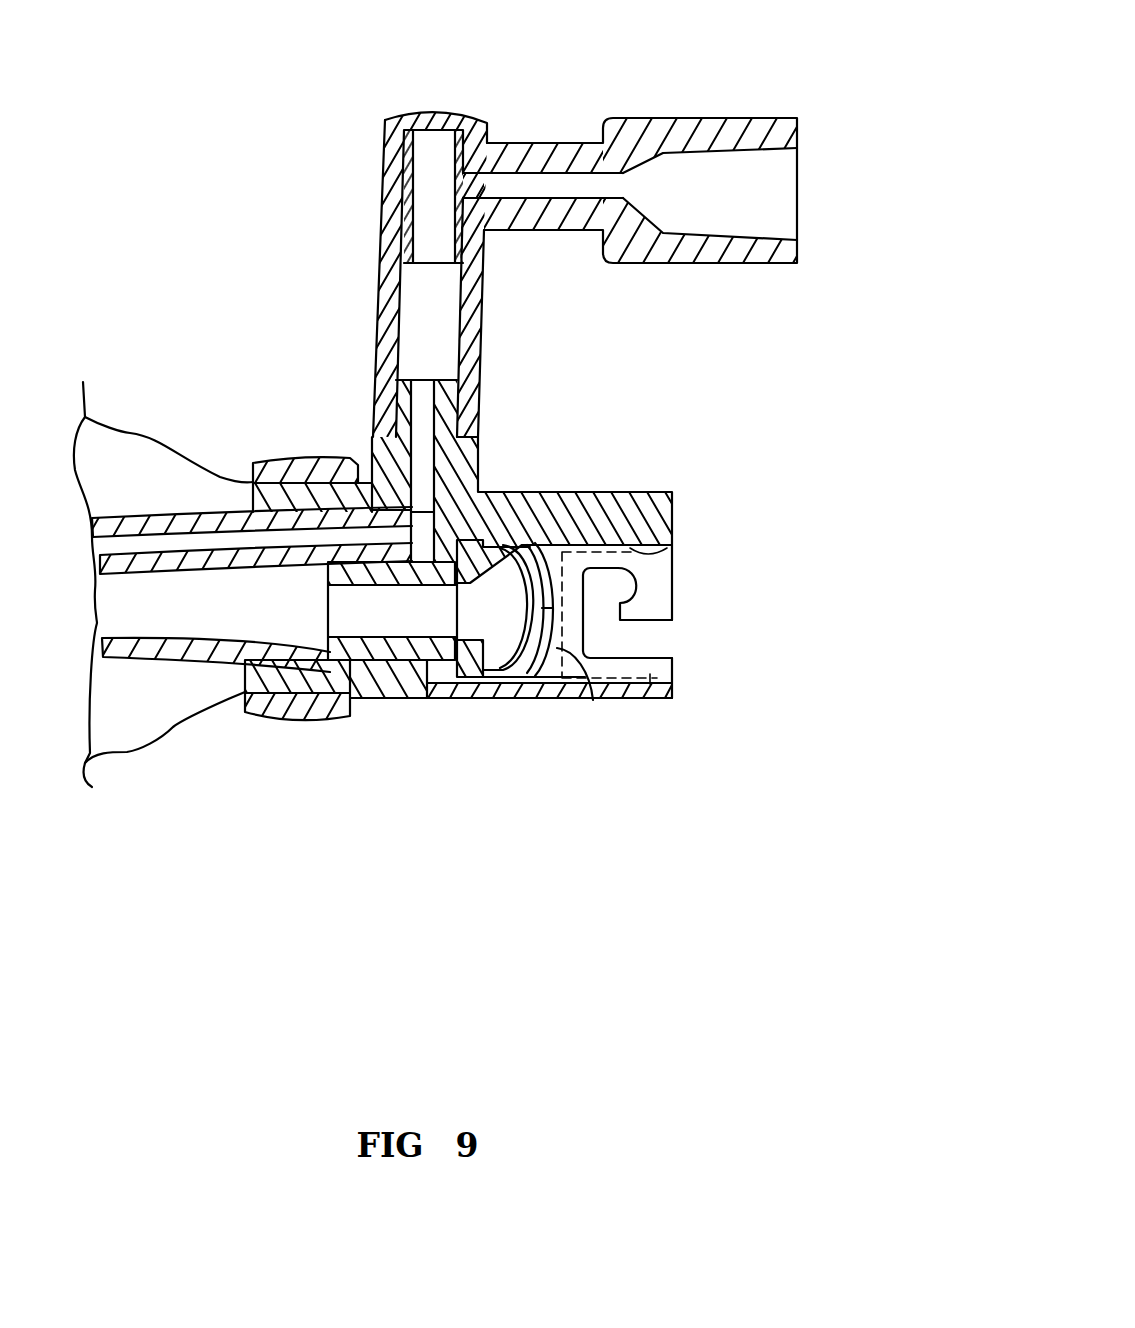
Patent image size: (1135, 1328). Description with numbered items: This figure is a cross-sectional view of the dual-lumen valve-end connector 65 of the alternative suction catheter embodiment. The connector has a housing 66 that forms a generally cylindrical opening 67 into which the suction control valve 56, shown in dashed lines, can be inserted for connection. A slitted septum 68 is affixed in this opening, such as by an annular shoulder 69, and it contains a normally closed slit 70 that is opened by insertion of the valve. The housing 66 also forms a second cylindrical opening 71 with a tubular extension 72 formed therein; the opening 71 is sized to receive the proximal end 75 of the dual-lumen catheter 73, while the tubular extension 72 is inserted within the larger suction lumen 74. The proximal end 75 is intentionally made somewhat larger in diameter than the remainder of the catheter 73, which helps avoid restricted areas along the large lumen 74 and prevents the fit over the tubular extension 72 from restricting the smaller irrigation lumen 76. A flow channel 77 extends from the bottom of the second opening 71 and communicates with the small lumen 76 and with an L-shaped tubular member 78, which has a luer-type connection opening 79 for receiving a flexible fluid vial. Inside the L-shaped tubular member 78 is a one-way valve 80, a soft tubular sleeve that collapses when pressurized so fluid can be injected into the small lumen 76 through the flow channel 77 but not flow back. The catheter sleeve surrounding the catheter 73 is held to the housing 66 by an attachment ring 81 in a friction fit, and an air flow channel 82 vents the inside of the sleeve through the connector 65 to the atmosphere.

The suction control valve 56 is at (650, 678).
The dual-lumen valve-end connector 65 is at (253, 318).
The housing 66 is at (537, 478).
The generally cylindrical opening 67 is at (672, 550).
The slitted septum 68 is at (543, 680).
The annular shoulder 69 is at (500, 672).
The slit 70 is at (593, 703).
The second cylindrical opening 71 is at (247, 663).
The tubular extension 72 is at (432, 655).
The dual-lumen catheter 73 is at (139, 692).
The suction lumen 74 is at (97, 623).
The proximal end 75 is at (350, 712).
The irrigation lumen 76 is at (182, 545).
The flow channel 77 is at (428, 460).
The L-shaped tubular member 78 is at (543, 123).
The luer-type connection opening 79 is at (775, 215).
The one-way valve 80 is at (390, 153).
The attachment ring 81 is at (317, 458).
The air flow channel 82 is at (280, 693).